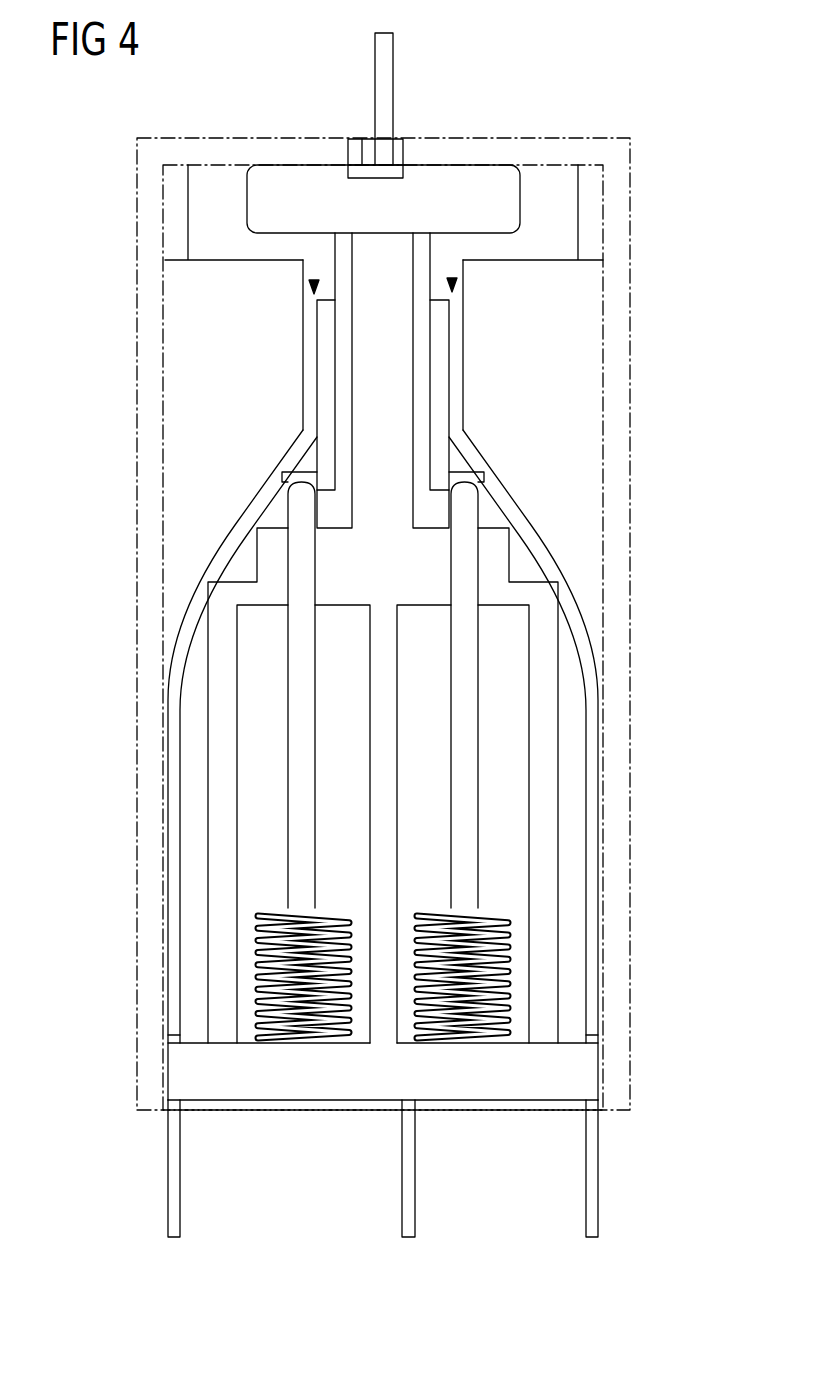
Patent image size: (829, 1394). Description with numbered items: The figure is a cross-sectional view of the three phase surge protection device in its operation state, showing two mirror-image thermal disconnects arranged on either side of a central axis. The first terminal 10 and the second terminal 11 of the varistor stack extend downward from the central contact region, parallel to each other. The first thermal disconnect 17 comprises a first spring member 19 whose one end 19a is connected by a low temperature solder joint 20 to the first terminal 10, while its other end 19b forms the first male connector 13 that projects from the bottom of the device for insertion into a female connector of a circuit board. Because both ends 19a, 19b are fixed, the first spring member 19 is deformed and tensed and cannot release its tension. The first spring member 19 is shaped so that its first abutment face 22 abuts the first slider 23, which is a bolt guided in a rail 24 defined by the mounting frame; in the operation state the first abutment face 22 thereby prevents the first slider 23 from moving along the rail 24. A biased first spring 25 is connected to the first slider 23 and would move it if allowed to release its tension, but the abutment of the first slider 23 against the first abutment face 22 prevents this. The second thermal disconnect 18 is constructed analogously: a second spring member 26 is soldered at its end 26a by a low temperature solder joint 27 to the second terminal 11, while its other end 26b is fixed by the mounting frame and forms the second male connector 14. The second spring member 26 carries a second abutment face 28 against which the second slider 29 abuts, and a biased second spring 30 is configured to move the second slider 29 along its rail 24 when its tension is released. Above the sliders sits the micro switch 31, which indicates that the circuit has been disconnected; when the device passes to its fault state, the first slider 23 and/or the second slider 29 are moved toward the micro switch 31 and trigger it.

The first terminal 10 is at (330, 318).
The second terminal 11 is at (435, 363).
The first male connector 13 is at (115, 1168).
The second male connector 14 is at (651, 1168).
The first thermal disconnect 17 is at (314, 280).
The second thermal disconnect 18 is at (452, 278).
The first spring member 19 is at (222, 527).
The end of the first spring member 19a is at (312, 370).
The other end of the first spring member 19b is at (172, 1170).
The low temperature solder joint 20 is at (315, 402).
The first abutment face 22 is at (295, 473).
The first slider 23 is at (298, 688).
The rail 24 is at (280, 557).
The first spring 25 is at (255, 987).
The second spring member 26 is at (540, 525).
The end of the second spring member 26a is at (455, 325).
The end of the second spring member 26b is at (592, 1170).
The low temperature solder joint 27 is at (453, 403).
The second abutment face 28 is at (472, 472).
The second slider 29 is at (470, 688).
The second spring 30 is at (511, 990).
The micro switch 31 is at (466, 190).